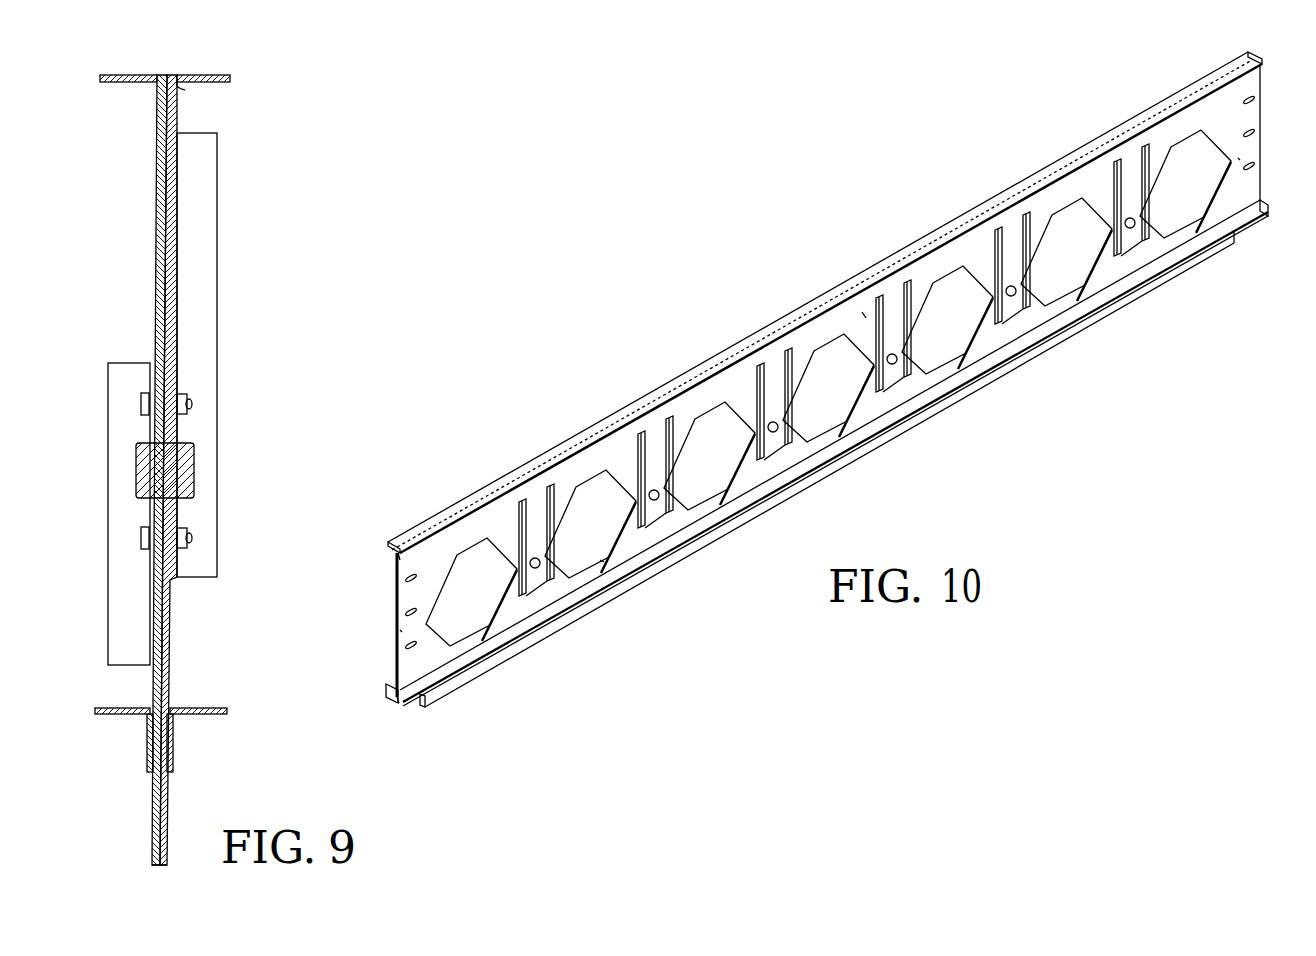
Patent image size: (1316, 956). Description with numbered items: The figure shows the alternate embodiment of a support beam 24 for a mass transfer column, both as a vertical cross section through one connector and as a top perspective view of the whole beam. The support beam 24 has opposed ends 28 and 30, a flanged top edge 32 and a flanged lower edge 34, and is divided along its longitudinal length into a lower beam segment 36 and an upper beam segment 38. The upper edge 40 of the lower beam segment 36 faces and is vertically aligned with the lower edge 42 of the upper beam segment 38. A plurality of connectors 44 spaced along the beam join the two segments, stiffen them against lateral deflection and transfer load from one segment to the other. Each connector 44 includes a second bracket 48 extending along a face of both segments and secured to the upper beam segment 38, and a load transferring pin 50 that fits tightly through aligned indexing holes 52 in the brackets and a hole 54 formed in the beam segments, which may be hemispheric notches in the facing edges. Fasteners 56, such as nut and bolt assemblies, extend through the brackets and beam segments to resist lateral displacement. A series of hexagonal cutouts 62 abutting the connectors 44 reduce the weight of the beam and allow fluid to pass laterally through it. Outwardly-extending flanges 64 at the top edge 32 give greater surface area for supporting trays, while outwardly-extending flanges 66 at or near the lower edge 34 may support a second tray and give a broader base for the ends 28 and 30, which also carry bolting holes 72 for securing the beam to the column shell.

In FIG. 9, the support beam 24 is at (164, 454).
In FIG. 10, the support beam 24 is at (814, 389).
In FIG. 10, the opposed end 28 is at (402, 630).
In FIG. 10, the opposed end 30 is at (1240, 132).
In FIG. 9, the flanged top edge 32 is at (183, 90).
In FIG. 10, the flanged top edge 32 is at (397, 557).
In FIG. 9, the flanged lower edge 34 is at (168, 858).
In FIG. 10, the flanged lower edge 34 is at (396, 700).
In FIG. 10, the lower beam segment 36 is at (872, 403).
In FIG. 9, the upper beam segment 38 is at (156, 128).
In FIG. 10, the upper beam segment 38 is at (866, 318).
In FIG. 10, the upper edge 40 is at (1230, 150).
In FIG. 10, the lower edge 42 is at (1236, 160).
In FIG. 9, the connector 44 is at (173, 399).
In FIG. 10, the connector 44 is at (834, 379).
In FIG. 9, the second bracket 48 is at (200, 290).
In FIG. 10, the second bracket 48 is at (757, 382).
In FIG. 9, the load transferring pin 50 is at (160, 470).
In FIG. 10, the load transferring pin 50 is at (665, 495).
In FIG. 9, the indexing hole 52 is at (140, 455).
In FIG. 9, the hole 54 is at (140, 478).
In FIG. 9, the fastener 56 is at (192, 405).
In FIG. 10, the fastener 56 is at (650, 514).
In FIG. 10, the cutout 62 is at (960, 292).
In FIG. 9, the outwardly-extending flange 64 is at (122, 76).
In FIG. 10, the outwardly-extending flange 64 is at (420, 543).
In FIG. 9, the outwardly-extending flange 66 is at (106, 714).
In FIG. 10, the outwardly-extending flange 66 is at (398, 684).
In FIG. 10, the bolting hole 72 is at (407, 582).